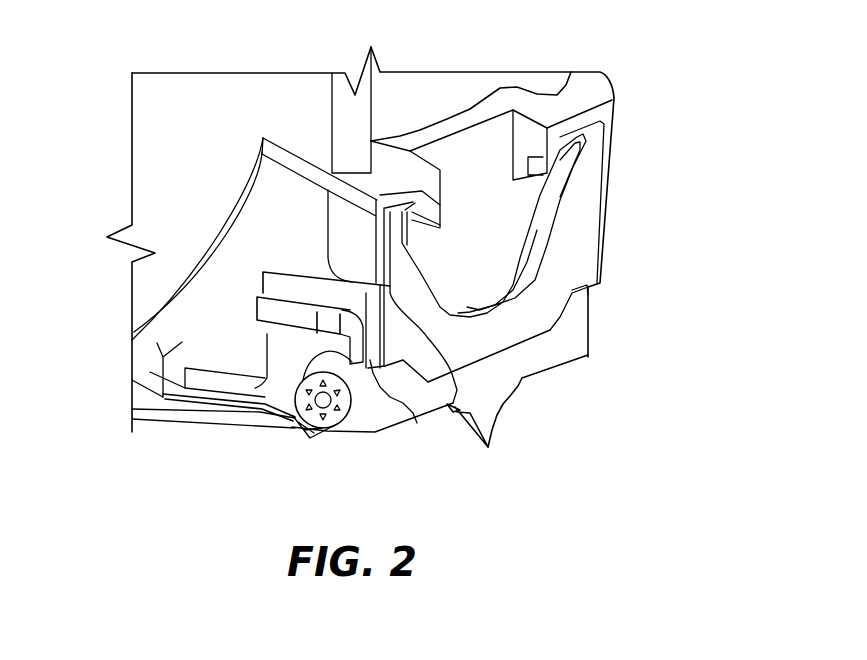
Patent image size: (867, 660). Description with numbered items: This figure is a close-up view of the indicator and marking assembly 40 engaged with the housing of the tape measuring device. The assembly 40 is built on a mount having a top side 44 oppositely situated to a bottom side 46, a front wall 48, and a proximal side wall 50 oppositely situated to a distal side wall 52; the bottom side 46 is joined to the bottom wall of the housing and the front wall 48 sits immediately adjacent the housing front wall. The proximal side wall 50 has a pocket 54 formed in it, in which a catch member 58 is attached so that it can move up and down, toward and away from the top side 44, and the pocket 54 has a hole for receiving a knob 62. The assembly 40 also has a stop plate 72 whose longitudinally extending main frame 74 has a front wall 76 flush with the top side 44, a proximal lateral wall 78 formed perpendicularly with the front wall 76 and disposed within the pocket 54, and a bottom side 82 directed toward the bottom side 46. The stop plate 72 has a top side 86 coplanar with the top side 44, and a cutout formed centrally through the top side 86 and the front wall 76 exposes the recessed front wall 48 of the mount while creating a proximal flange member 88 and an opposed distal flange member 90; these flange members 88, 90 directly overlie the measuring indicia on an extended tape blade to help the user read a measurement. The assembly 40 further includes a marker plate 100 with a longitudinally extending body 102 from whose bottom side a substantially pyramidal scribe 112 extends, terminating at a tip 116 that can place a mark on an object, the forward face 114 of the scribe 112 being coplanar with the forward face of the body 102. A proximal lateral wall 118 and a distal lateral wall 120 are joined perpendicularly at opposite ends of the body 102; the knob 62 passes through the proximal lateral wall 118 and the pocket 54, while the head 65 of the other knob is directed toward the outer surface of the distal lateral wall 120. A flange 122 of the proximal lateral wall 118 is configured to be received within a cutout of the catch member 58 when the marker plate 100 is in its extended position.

The indicator and marking assembly 40 is at (661, 134).
The top side 44 is at (604, 72).
The bottom side 46 is at (213, 420).
The front wall 48 is at (523, 196).
The proximal side wall 50 is at (136, 410).
The distal side wall 52 is at (606, 228).
The pocket 54 is at (180, 417).
The catch member 58 is at (240, 420).
The knob 62 is at (332, 427).
The head 65 is at (592, 316).
The stop plate 72 is at (595, 265).
The longitudinally extending main frame 74 is at (545, 305).
The front wall 76 is at (570, 362).
The proximal lateral wall 78 is at (415, 423).
The bottom side 82 is at (505, 360).
The top side 86 is at (614, 98).
The proximal flange member 88 is at (455, 416).
The distal flange member 90 is at (598, 150).
The marker plate 100 is at (592, 352).
The longitudinally extending body 102 is at (543, 366).
The scribe 112 is at (491, 449).
The forward face 114 is at (497, 420).
The tip 116 is at (489, 452).
The proximal lateral wall 118 is at (386, 423).
The distal lateral wall 120 is at (591, 357).
The flange 122 is at (264, 401).